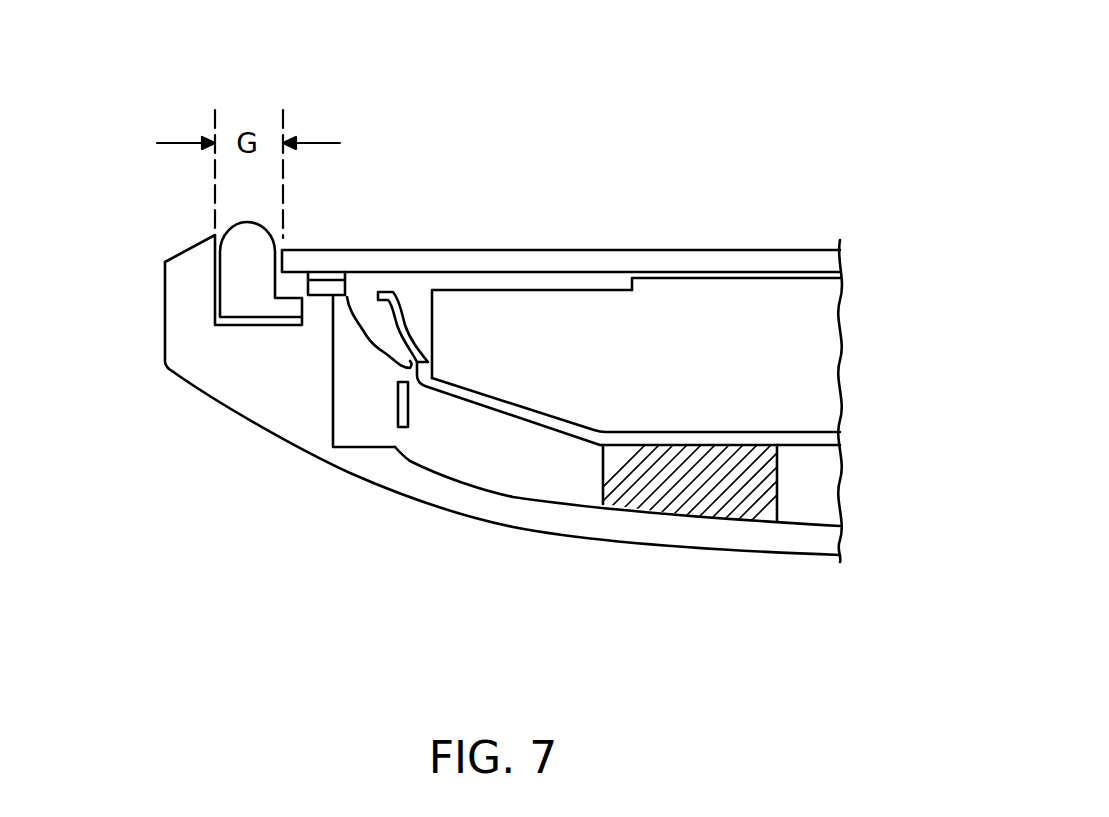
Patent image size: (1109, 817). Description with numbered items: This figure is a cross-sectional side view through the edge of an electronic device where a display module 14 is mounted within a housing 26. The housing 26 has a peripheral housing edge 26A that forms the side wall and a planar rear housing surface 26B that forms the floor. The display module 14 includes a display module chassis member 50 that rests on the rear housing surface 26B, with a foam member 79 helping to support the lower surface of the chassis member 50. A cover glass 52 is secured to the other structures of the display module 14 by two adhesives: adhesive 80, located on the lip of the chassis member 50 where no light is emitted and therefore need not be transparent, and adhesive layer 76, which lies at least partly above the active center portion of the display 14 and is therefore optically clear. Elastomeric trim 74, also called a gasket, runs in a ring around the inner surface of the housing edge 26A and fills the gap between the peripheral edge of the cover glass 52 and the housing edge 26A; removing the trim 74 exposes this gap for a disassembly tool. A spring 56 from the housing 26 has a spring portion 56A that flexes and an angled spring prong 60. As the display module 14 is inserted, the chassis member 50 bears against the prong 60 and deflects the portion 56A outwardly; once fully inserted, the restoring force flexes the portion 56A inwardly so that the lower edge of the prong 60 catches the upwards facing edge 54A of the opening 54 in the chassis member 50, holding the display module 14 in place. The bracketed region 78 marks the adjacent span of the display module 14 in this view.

The display module 14 is at (693, 97).
The housing 26 is at (825, 540).
The housing edge 26A is at (180, 288).
The rear housing surface 26B is at (597, 573).
The display module chassis member 50 is at (313, 293).
The cover glass 52 is at (302, 262).
The opening 54 is at (370, 345).
The edge of opening 54A is at (432, 368).
The spring 56 is at (420, 418).
The spring portion 56A is at (400, 297).
The spring prong 60 is at (410, 337).
The elastomeric trim 74 is at (247, 228).
The adhesive layer 76 is at (782, 273).
The region 78 is at (867, 278).
The foam member 79 is at (598, 493).
The adhesive 80 is at (336, 279).